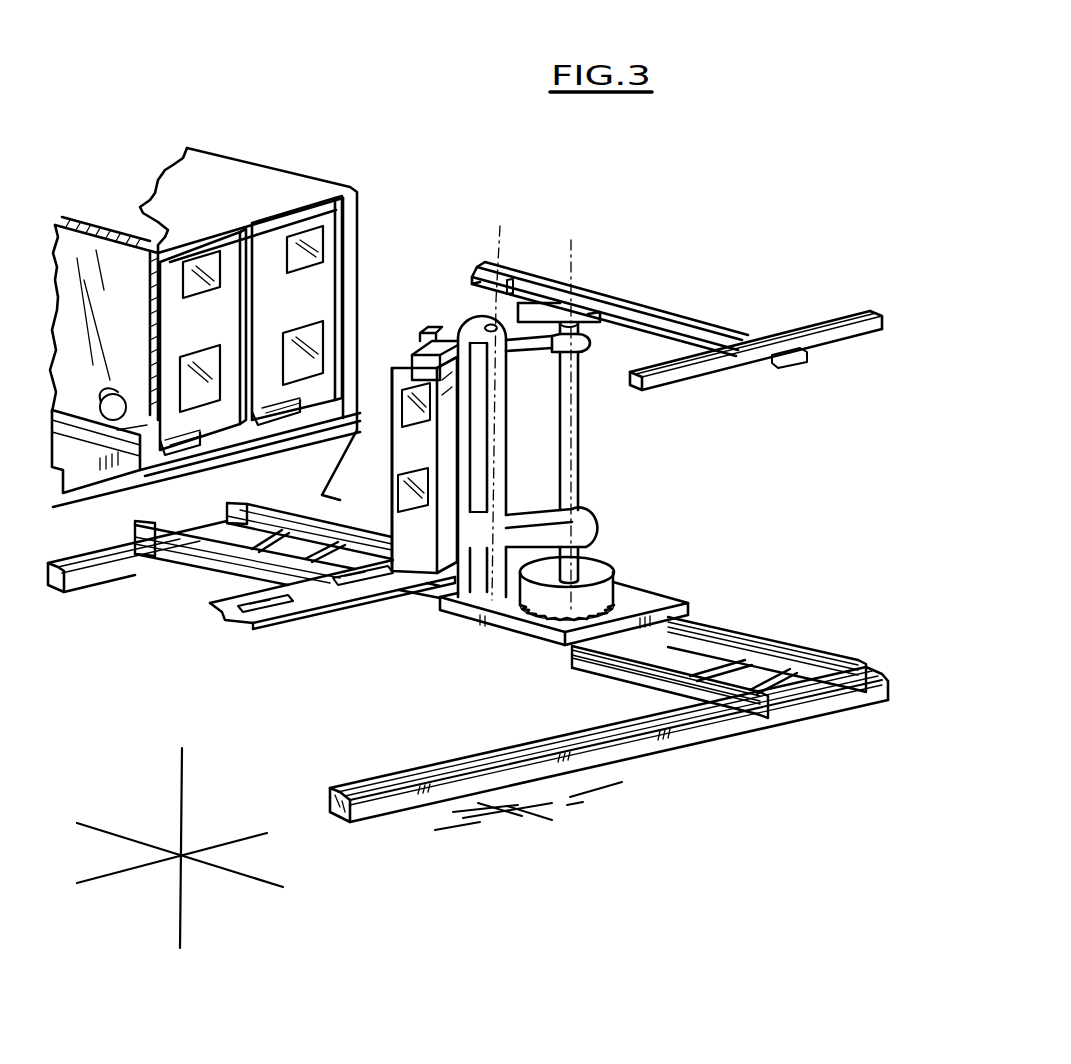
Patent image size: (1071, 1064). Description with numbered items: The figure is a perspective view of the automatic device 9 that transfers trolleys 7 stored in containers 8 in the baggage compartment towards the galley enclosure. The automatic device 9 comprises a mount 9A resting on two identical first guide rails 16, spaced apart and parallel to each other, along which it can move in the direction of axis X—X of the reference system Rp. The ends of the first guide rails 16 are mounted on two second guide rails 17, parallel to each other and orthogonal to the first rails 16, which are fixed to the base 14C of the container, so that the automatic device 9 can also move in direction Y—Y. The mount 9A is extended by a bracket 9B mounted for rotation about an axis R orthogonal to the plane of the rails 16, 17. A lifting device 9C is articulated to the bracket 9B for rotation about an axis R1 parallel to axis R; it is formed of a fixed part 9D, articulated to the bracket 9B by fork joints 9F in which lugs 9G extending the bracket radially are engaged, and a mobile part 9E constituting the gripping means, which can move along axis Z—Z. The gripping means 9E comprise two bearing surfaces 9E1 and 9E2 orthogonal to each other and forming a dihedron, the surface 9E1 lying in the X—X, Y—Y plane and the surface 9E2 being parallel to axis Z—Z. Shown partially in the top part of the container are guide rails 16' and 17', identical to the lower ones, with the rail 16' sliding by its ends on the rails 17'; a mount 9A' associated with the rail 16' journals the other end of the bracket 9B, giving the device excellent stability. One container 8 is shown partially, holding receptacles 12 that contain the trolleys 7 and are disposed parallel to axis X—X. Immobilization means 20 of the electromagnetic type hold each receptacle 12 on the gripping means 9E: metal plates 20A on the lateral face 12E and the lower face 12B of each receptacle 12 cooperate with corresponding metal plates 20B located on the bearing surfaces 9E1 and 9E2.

The trolley 7 is at (83, 256).
The container 8 is at (226, 160).
The receptacle 12 is at (232, 246).
The lower face of the receptacle 12B is at (187, 443).
The lateral face of the receptacle 12E is at (222, 413).
The metal plates 20A is at (193, 290).
The immobilization means 20 is at (240, 590).
The metal plates 20B is at (255, 607).
The automatic device 9 is at (630, 464).
The mount 9A is at (588, 591).
The mount 9A' is at (580, 282).
The bracket 9B is at (570, 467).
The lifting device 9C is at (407, 340).
The fixed part 9D is at (477, 367).
The mobile part / gripping means 9E is at (385, 524).
The bearing surface 9E1 is at (318, 590).
The bearing surface 9E2 is at (393, 440).
The fork joints 9F is at (482, 323).
The lugs 9G is at (530, 352).
The first guide rails 16 is at (500, 610).
The guide rail 16' is at (610, 309).
The second guide rails 17 is at (468, 671).
The guide rails 17' is at (756, 327).
The base of the container 14C is at (537, 797).
The axis of rotation R is at (565, 258).
The axis of rotation R1 is at (504, 399).
The reference system Rp is at (189, 865).